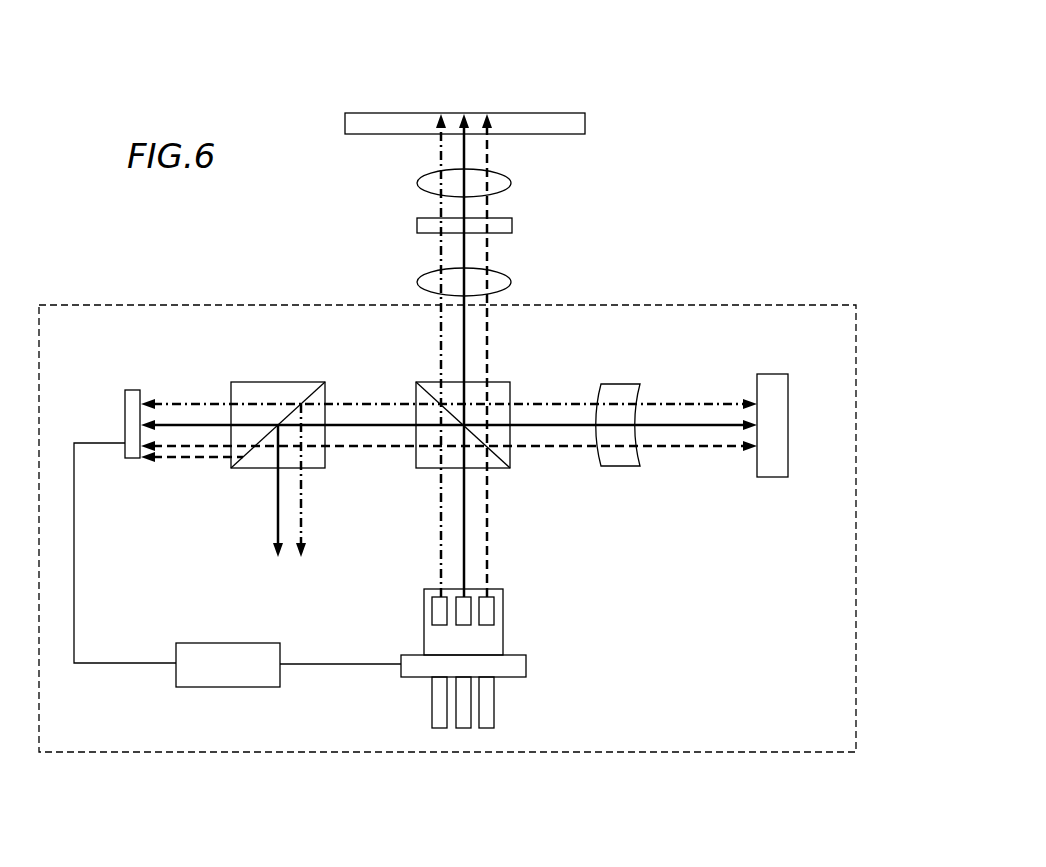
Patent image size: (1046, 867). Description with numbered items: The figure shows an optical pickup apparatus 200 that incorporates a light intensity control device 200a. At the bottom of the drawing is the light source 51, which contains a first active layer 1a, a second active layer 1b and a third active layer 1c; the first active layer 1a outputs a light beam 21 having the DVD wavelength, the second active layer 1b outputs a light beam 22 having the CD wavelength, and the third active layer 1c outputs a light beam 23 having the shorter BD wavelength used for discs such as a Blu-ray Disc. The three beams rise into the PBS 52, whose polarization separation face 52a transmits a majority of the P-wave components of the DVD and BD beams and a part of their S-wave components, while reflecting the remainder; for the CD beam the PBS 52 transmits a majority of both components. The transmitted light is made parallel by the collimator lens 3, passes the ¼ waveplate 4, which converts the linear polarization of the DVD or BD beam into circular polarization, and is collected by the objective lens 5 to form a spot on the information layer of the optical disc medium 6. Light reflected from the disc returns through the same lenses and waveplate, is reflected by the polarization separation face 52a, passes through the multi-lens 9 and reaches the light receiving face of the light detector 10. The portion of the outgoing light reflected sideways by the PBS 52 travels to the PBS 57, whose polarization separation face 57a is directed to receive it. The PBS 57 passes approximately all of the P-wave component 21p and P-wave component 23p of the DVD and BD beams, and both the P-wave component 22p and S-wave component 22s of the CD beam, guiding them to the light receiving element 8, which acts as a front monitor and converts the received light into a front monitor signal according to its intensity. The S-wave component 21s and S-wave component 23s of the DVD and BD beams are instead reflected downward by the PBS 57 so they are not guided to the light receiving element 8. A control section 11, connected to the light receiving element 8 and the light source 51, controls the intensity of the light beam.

The optical pickup apparatus 200 is at (704, 107).
The light intensity control device 200a is at (772, 305).
The optical disc medium 6 is at (585, 124).
The objective lens 5 is at (417, 185).
The ¼ waveplate 4 is at (417, 225).
The collimator lens 3 is at (512, 282).
The light beam 21 is at (466, 500).
The light beam 22 is at (489, 547).
The light beam 23 is at (441, 545).
The P-wave component 21p is at (212, 424).
The P-wave component 22p is at (172, 456).
The P-wave component 23p is at (183, 401).
The S-wave component 21s is at (276, 520).
The S-wave component 22s is at (193, 462).
The S-wave component 23s is at (303, 512).
The PBS 57 is at (275, 382).
The polarization separation face 57a is at (310, 384).
The PBS 52 is at (416, 468).
The polarization separation face 52a is at (438, 404).
The light receiving element 8 is at (125, 424).
The multi-lens 9 is at (618, 384).
The light detector 10 is at (772, 374).
The control section 11 is at (235, 643).
The light source 51 is at (424, 622).
The first active layer 1a is at (463, 626).
The second active layer 1b is at (494, 612).
The third active layer 1c is at (432, 610).